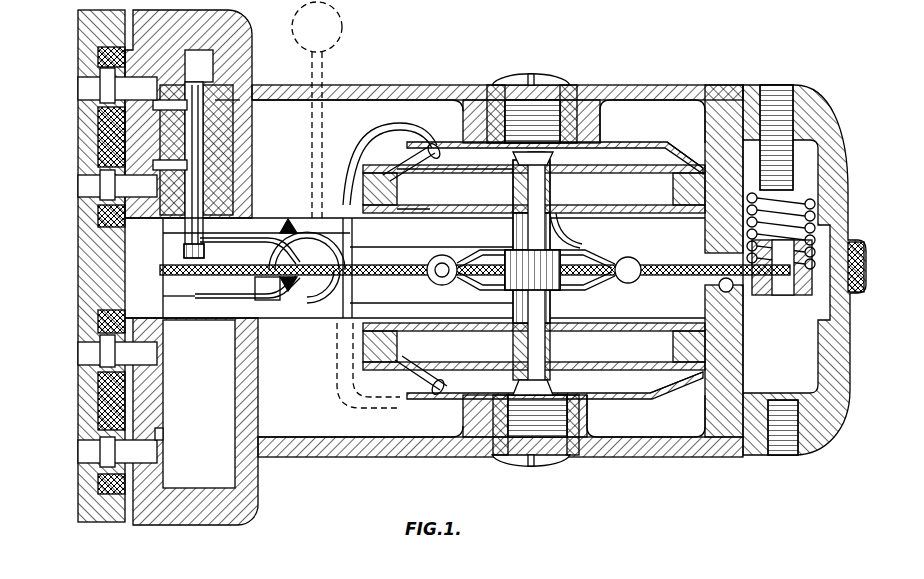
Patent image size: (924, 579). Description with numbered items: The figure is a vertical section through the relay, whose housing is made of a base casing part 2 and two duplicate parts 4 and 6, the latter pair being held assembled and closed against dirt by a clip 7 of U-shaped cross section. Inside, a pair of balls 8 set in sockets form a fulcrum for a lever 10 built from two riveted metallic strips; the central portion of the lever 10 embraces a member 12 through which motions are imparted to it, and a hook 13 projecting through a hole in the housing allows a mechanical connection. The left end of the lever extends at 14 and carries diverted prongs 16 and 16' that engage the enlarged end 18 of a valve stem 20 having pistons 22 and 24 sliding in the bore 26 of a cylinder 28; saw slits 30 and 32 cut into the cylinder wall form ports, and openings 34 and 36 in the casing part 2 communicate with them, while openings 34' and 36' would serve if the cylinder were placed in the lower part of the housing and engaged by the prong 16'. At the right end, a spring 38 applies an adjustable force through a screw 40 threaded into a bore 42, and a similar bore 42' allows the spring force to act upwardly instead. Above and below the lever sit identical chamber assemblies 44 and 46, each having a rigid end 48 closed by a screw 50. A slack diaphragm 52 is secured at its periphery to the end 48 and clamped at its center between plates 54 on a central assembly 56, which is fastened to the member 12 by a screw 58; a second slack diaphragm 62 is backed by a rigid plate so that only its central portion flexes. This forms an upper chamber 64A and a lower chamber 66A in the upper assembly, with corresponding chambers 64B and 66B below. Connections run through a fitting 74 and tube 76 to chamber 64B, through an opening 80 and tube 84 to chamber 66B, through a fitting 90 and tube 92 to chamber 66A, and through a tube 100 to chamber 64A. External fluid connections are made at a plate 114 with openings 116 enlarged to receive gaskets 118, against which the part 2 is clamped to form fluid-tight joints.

The base casing part 2 is at (236, 12).
The upper casing part 4 is at (425, 85).
The lower casing part 6 is at (395, 452).
The clip 7 is at (860, 246).
The balls 8 is at (735, 290).
The lever 10 is at (655, 265).
The member 12 is at (563, 270).
The hook 13 is at (342, 43).
The lever extension 14 is at (179, 298).
The prong 16 is at (250, 242).
The prong 16' is at (247, 289).
The enlarged end of valve stem 18 is at (205, 252).
The valve stem 20 is at (213, 140).
The piston 22 is at (210, 163).
The piston 24 is at (192, 82).
The bore 26 is at (160, 45).
The cylinder 28 is at (247, 118).
The saw slit 30 is at (187, 193).
The saw slit 32 is at (215, 100).
The opening 34 is at (117, 89).
The opening 34' is at (142, 435).
The opening 36 is at (117, 186).
The opening 36' is at (142, 353).
The spring 38 is at (840, 172).
The screw 40 is at (795, 150).
The bore 42 is at (797, 122).
The bore 42' is at (797, 441).
The chamber assembly 44 is at (672, 150).
The chamber assembly 46 is at (668, 390).
The rigid end 48 is at (623, 142).
The screw 50 is at (555, 78).
The slack diaphragm 52 is at (638, 174).
The plates 54 is at (593, 171).
The central assembly 56 is at (565, 194).
The screw 58 is at (515, 159).
The slack diaphragm 62 is at (572, 226).
The upper chamber 64A is at (455, 150).
The chamber 64B is at (463, 380).
The lower chamber 66A is at (467, 192).
The chamber 66B is at (467, 343).
The fitting 74 is at (280, 320).
The tube 76 is at (353, 299).
The opening 80 is at (413, 214).
The tube 84 is at (345, 345).
The fitting 90 is at (288, 219).
The tube 92 is at (353, 237).
The tube 100 is at (360, 140).
The plate 114 is at (103, 524).
The openings 116 is at (96, 267).
The gaskets 118 is at (163, 43).